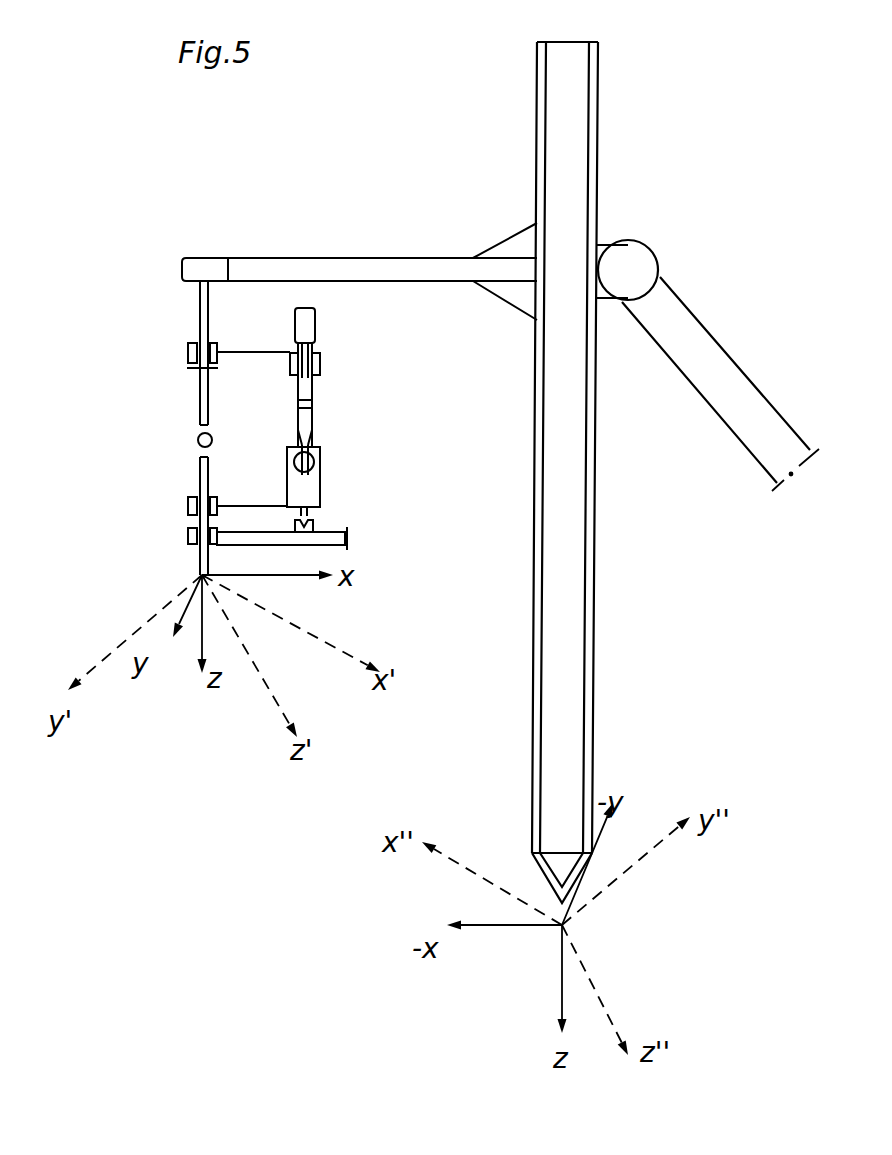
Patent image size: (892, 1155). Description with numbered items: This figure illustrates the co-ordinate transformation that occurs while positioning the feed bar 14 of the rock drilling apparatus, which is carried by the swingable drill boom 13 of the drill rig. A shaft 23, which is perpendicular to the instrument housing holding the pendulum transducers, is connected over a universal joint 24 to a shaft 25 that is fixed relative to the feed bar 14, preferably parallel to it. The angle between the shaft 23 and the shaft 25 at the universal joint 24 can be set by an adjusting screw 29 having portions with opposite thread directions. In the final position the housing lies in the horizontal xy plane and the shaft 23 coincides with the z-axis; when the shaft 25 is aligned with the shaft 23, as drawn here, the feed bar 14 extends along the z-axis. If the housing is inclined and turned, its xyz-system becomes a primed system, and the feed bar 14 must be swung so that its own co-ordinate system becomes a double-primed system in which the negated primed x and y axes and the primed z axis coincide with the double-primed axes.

The drill boom 13 is at (708, 330).
The feed bar 14 is at (537, 125).
The shaft 23 is at (198, 560).
The universal joint 24 is at (198, 442).
The shaft 25 is at (200, 316).
The adjusting screw 29 is at (317, 330).